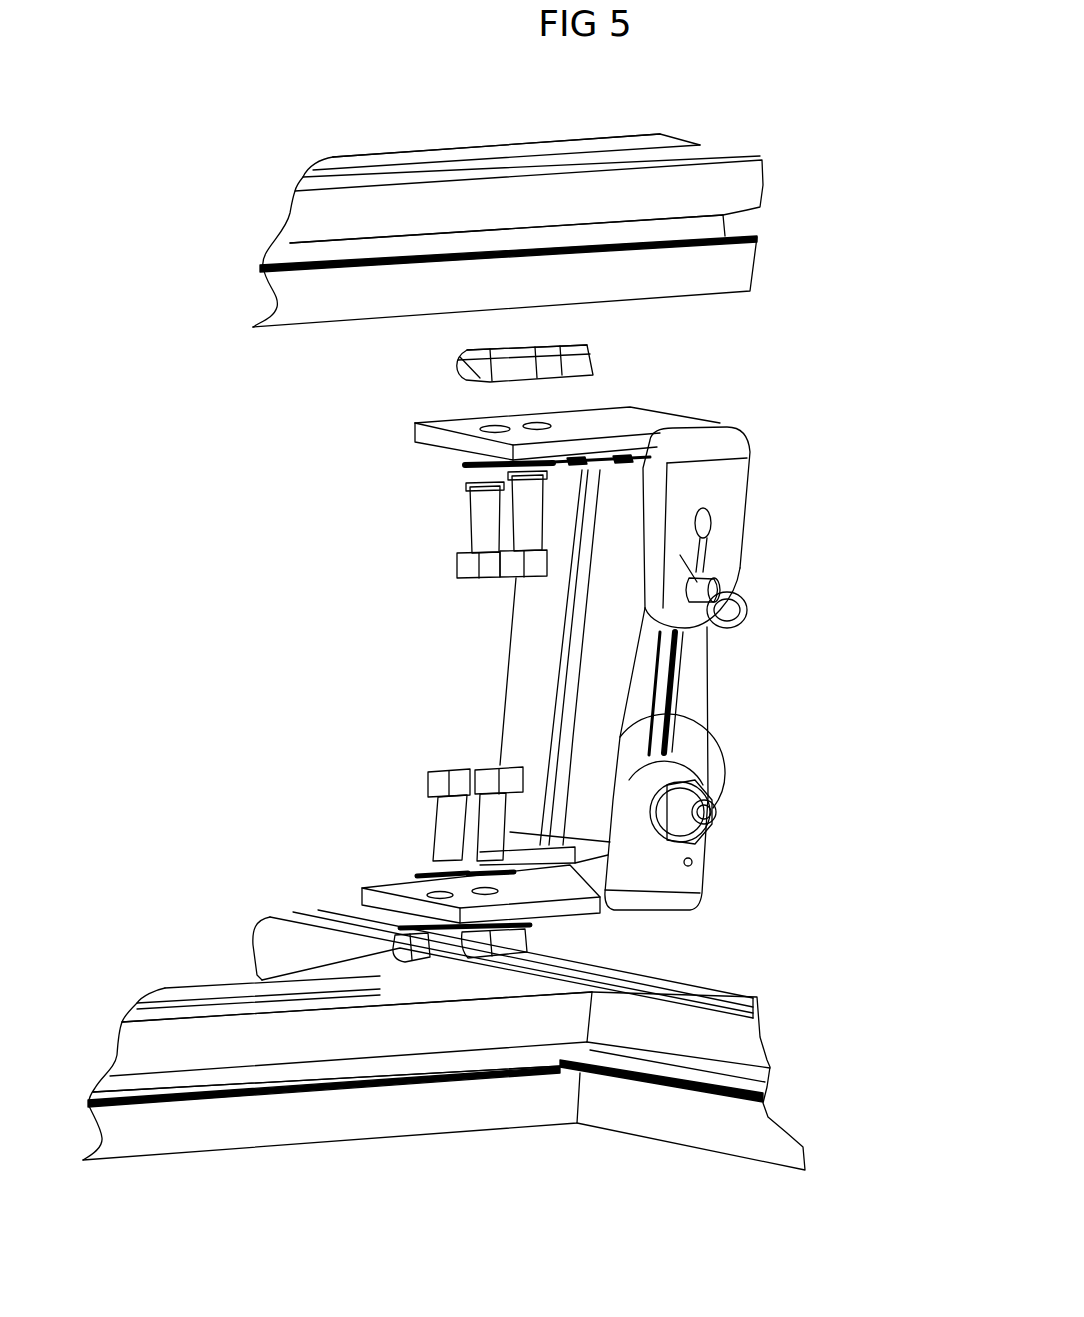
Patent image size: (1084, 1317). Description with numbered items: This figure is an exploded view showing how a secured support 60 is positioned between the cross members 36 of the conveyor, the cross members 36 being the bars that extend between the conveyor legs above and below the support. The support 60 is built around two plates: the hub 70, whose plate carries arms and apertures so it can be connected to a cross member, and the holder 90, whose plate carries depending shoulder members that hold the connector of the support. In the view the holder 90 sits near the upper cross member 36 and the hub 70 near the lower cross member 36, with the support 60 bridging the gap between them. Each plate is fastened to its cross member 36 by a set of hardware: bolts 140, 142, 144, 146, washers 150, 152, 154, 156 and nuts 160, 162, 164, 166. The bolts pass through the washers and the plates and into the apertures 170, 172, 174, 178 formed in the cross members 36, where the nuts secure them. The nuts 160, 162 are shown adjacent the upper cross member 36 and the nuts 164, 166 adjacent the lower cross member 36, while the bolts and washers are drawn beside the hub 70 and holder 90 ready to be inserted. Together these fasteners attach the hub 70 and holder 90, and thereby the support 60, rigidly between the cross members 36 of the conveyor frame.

The cross member 36 is at (642, 142).
The support 60 is at (757, 538).
The hub 70 is at (660, 903).
The holder 90 is at (680, 410).
The bolt 140 is at (457, 568).
The bolt 142 is at (510, 578).
The bolt 144 is at (497, 768).
The bolt 146 is at (452, 768).
The washer 150 is at (505, 468).
The washer 152 is at (515, 478).
The washer 154 is at (418, 876).
The washer 156 is at (425, 892).
The nut 160 is at (455, 381).
The nut 162 is at (575, 372).
The nut 164 is at (600, 958).
The nut 166 is at (263, 938).
The aperture 170 is at (307, 993).
The aperture 172 is at (430, 1060).
The aperture 174 is at (710, 223).
The aperture 178 is at (470, 168).